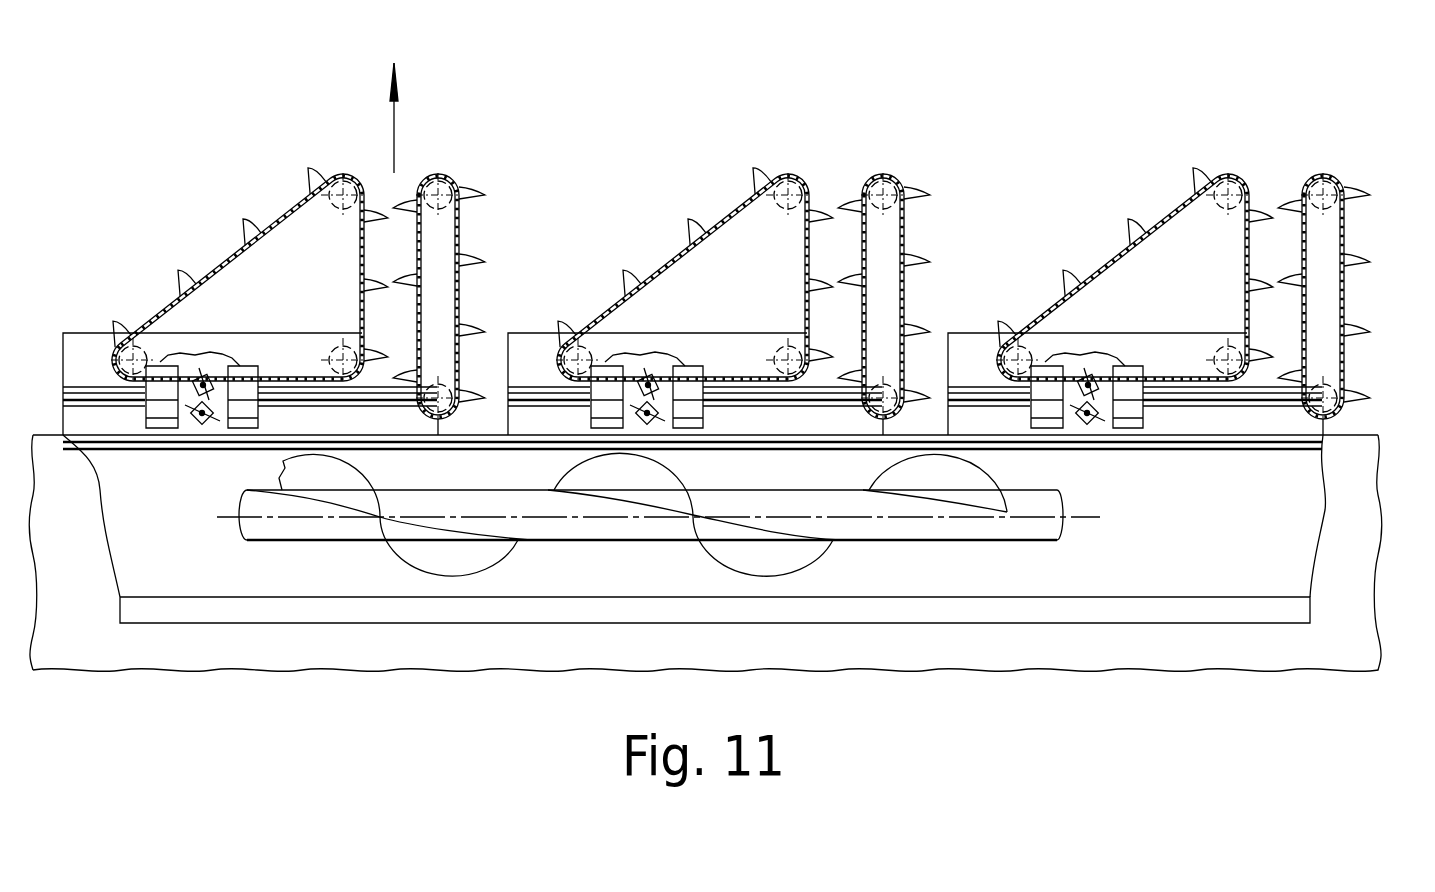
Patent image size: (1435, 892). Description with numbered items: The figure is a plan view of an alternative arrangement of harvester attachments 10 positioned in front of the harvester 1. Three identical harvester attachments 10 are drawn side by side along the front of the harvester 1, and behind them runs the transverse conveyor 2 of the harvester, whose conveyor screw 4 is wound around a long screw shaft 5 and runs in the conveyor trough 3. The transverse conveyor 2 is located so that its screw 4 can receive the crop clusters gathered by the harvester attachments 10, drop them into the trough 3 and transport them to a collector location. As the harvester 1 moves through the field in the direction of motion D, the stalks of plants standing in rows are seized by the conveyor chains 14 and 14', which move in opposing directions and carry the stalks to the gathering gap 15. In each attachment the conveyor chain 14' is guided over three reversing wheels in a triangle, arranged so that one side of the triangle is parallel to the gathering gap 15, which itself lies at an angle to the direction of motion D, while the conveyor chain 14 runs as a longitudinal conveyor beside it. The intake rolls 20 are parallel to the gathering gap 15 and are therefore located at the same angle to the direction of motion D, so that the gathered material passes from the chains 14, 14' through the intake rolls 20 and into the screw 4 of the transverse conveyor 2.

The harvester 1 is at (62, 648).
The transverse conveyor 2 is at (1325, 475).
The conveyor trough 3 is at (1178, 507).
The conveyor screw 4 is at (497, 567).
The screw shaft 5 is at (1013, 533).
The harvester attachment 10 is at (213, 265).
The conveyor chain 14 is at (912, 295).
The conveyor chain 14' is at (680, 261).
The gathering gap 15 is at (352, 392).
The intake rolls 20 is at (208, 416).
The direction of motion D is at (396, 106).